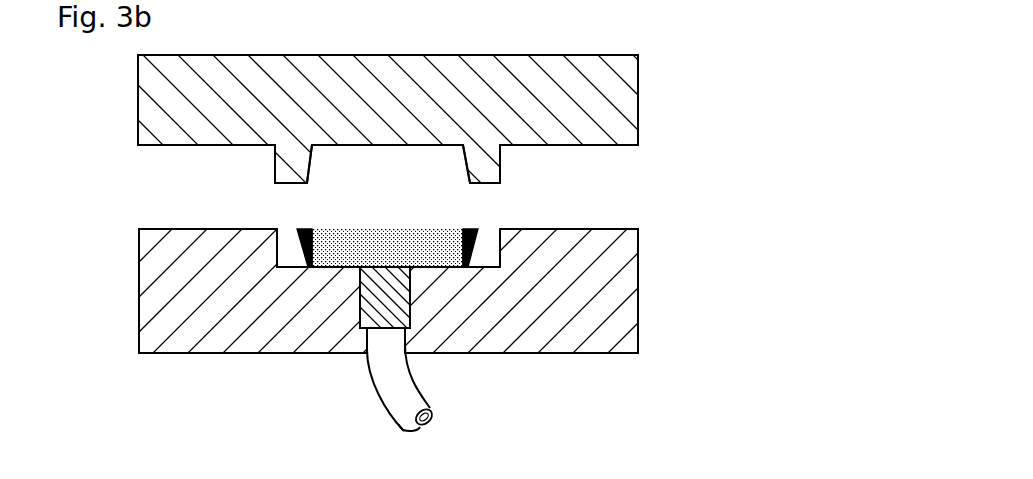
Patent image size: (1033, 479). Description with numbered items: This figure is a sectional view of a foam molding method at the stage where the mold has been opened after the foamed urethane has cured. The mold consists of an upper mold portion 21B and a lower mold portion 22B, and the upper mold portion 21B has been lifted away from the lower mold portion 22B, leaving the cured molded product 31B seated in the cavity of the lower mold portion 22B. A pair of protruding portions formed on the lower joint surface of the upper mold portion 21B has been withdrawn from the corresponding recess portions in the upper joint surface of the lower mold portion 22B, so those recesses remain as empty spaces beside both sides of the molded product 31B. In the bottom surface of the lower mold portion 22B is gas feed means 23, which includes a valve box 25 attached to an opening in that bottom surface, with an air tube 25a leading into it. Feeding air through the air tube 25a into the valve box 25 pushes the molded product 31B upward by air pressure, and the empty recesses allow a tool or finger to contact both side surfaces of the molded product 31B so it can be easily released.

The upper mold portion 21B is at (638, 66).
The lower mold portion 22B is at (638, 254).
The gas feed means 23 is at (357, 373).
The valve box 25 is at (410, 305).
The air tube 25a is at (392, 420).
The molded product 31B is at (348, 228).